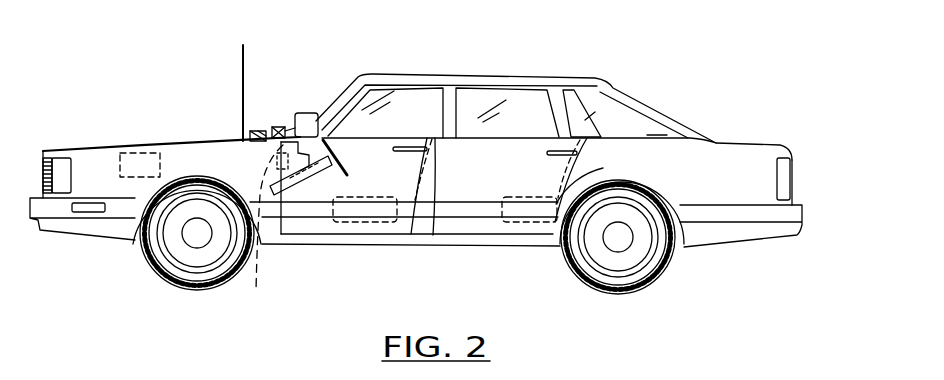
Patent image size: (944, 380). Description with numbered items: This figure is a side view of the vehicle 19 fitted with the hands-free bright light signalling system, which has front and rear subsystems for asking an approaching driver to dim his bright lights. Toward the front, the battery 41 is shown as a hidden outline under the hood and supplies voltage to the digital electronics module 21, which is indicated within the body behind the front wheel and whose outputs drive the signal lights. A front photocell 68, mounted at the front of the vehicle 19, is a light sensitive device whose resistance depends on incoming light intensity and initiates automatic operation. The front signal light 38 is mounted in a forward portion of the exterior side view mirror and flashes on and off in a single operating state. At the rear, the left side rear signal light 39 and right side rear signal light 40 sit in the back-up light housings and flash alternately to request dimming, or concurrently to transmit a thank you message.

The vehicle 19 is at (553, 77).
The digital electronics module 21 is at (252, 297).
The front signal light 38 is at (297, 128).
The left side rear signal light 39 is at (833, 159).
The right side rear signal light 40 is at (852, 188).
The battery 41 is at (137, 146).
The front photocell 68 is at (283, 127).